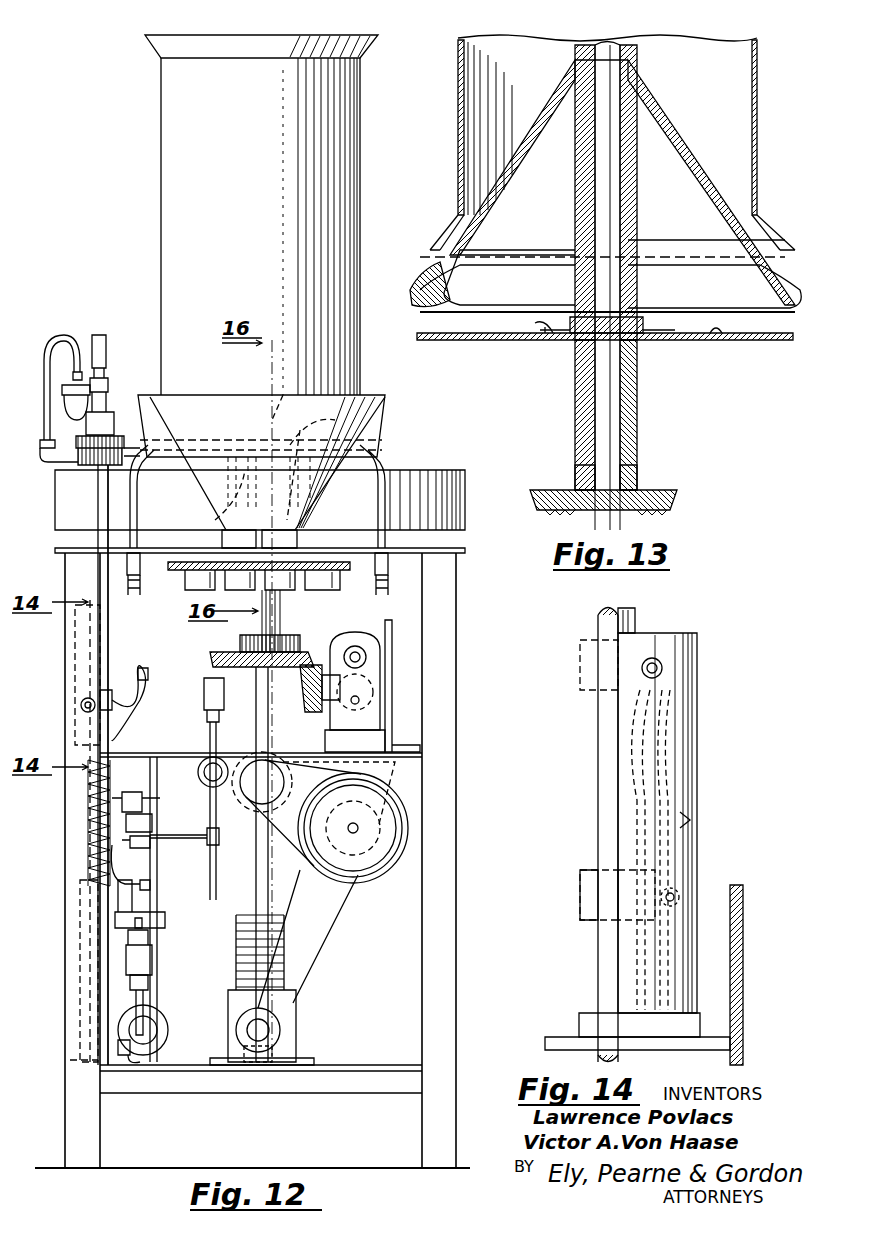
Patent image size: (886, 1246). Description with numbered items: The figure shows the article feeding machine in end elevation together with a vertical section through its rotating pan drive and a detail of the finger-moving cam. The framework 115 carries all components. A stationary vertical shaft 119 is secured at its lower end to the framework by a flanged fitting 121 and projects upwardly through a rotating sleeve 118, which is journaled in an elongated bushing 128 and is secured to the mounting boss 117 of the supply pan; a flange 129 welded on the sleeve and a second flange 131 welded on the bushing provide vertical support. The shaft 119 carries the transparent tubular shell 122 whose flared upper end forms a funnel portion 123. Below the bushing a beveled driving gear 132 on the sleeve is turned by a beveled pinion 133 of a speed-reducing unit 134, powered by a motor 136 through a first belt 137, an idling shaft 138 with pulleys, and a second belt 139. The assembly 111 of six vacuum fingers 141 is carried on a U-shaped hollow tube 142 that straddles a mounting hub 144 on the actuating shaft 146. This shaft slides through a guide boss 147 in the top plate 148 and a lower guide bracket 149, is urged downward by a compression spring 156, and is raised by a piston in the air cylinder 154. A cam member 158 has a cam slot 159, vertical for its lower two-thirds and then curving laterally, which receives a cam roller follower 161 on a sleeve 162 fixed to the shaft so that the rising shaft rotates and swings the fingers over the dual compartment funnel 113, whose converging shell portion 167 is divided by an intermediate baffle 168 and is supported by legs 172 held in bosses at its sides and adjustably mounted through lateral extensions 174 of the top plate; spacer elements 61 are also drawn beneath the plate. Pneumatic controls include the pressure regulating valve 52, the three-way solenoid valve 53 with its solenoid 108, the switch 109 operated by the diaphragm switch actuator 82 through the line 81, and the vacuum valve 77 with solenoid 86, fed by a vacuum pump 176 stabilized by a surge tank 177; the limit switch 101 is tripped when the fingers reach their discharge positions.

In FIG. 12, the adjustable pressure regulating valve 52 is at (158, 1008).
In FIG. 12, the three-way solenoid actuated valve 53 is at (150, 982).
In FIG. 12, the spacer blocks 61 is at (351, 583).
In FIG. 12, the solenoid actuated vacuum valve 77 is at (150, 845).
In FIG. 12, the second line 81 is at (152, 884).
In FIG. 12, the pressure-responsive switch actuator 82 is at (170, 918).
In FIG. 12, the solenoid 86 is at (155, 822).
In FIG. 12, the double pole limit switch 101 is at (150, 805).
In FIG. 12, the solenoid 108 is at (152, 960).
In FIG. 12, the switch 109 is at (128, 958).
In FIG. 12, the assembly of vacuum fingers 111 is at (301, 505).
In FIG. 12, the dual compartment funnel 113 is at (375, 389).
In FIG. 14, the framework 115 is at (745, 955).
In FIG. 13, the mounting boss 117 is at (672, 135).
In FIG. 13, the rotating sleeve 118 is at (578, 428).
In FIG. 13, the stationary vertical shaft 119 is at (624, 225).
In FIG. 12, the flanged fitting 121 is at (300, 1060).
In FIG. 12, the tubular shell 122 is at (229, 226).
In FIG. 13, the tubular shell 122 is at (758, 90).
In FIG. 12, the funnel portion 123 is at (152, 43).
In FIG. 12, the elongated bushing 128 is at (280, 620).
In FIG. 13, the elongated bushing 128 is at (638, 424).
In FIG. 13, the flange 129 is at (568, 318).
In FIG. 13, the second flange 131 is at (535, 340).
In FIG. 12, the beveled driving gear 132 is at (222, 660).
In FIG. 13, the beveled driving gear 132 is at (680, 490).
In FIG. 12, the beveled pinion 133 is at (312, 708).
In FIG. 12, the speed-reducing unit 134 is at (355, 630).
In FIG. 12, the motor 136 is at (380, 876).
In FIG. 12, the first belt 137 is at (295, 822).
In FIG. 12, the idling shaft 138 is at (244, 762).
In FIG. 12, the second belt 139 is at (262, 812).
In FIG. 12, the vacuum fingers 141 is at (215, 520).
In FIG. 12, the U-shaped hollow tube 142 is at (295, 440).
In FIG. 12, the mounting hub 144 is at (76, 462).
In FIG. 12, the actuating shaft 146 is at (110, 658).
In FIG. 14, the actuating shaft 146 is at (598, 820).
In FIG. 12, the guide boss 147 is at (100, 570).
In FIG. 12, the top plate 148 is at (56, 546).
In FIG. 13, the top plate 148 is at (722, 340).
In FIG. 14, the lower guide bracket 149 is at (580, 1013).
In FIG. 12, the air cylinder 154 is at (80, 1022).
In FIG. 12, the compression spring 156 is at (85, 858).
In FIG. 12, the cam member 158 is at (75, 670).
In FIG. 14, the cam member 158 is at (698, 760).
In FIG. 14, the cam slot 159 is at (695, 828).
In FIG. 12, the cam roller follower 161 is at (80, 713).
In FIG. 14, the cam roller follower 161 is at (665, 682).
In FIG. 12, the sleeve 162 is at (112, 690).
In FIG. 14, the sleeve 162 is at (578, 680).
In FIG. 12, the downwardly converging shell portion 167 is at (200, 400).
In FIG. 12, the intermediate baffle 168 is at (288, 395).
In FIG. 12, the legs 172 is at (130, 512).
In FIG. 12, the lateral extensions 174 is at (132, 598).
In FIG. 12, the vacuum pump 176 is at (290, 982).
In FIG. 12, the surge tank 177 is at (198, 752).